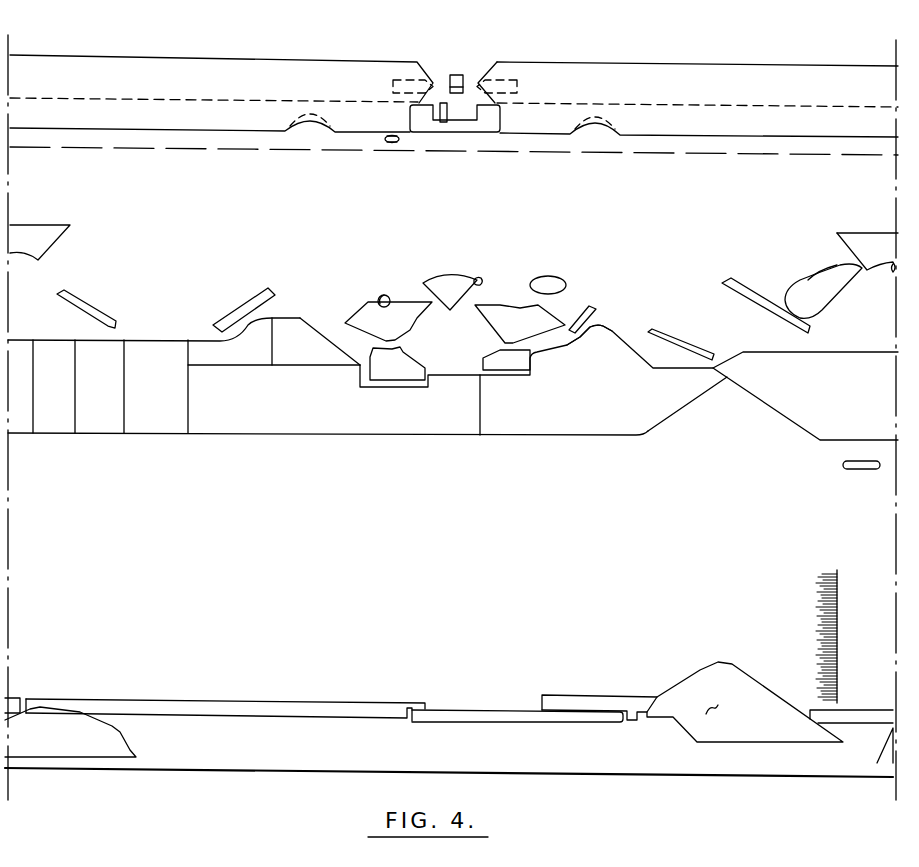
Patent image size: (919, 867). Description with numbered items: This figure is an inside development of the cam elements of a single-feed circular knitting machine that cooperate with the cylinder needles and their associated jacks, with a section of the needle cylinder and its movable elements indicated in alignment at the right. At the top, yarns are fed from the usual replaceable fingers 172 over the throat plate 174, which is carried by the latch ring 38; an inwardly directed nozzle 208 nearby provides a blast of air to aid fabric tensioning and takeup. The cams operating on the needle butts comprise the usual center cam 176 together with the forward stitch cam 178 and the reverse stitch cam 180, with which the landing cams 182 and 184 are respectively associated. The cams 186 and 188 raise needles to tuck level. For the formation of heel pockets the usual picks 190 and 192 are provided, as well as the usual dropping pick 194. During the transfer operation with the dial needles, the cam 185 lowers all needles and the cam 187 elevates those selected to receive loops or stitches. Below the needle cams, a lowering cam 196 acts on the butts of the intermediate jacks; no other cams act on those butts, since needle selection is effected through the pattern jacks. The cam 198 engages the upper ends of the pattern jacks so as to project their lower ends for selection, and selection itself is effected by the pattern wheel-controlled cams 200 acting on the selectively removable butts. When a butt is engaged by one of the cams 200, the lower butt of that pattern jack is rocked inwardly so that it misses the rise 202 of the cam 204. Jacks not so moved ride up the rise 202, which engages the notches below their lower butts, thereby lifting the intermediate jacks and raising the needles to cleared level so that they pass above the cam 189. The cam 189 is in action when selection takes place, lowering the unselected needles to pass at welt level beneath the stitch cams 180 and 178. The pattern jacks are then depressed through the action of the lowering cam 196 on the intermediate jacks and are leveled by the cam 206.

The latch ring 38 is at (375, 68).
The replaceable fingers 172 is at (444, 100).
The throat plate 174 is at (454, 133).
The nozzle 208 is at (390, 145).
The dropping pick 194 is at (14, 260).
The cam 185 is at (227, 318).
The cam 186 is at (313, 325).
The pick 190 is at (379, 297).
The forward stitch cam 178 is at (408, 308).
The center cam 176 is at (451, 281).
The pick 192 is at (481, 278).
The reverse stitch cam 180 is at (498, 310).
The cam 189 is at (588, 308).
The cam 188 is at (594, 321).
The landing cam 182 is at (400, 347).
The landing cam 184 is at (498, 349).
The cam 187 is at (697, 330).
The lowering cam 196 is at (676, 418).
The cam 198 is at (862, 469).
The cam 206 is at (48, 708).
The rise 202 is at (762, 688).
The cam 204 is at (732, 705).
The pattern wheel-controlled cams 200 is at (839, 627).